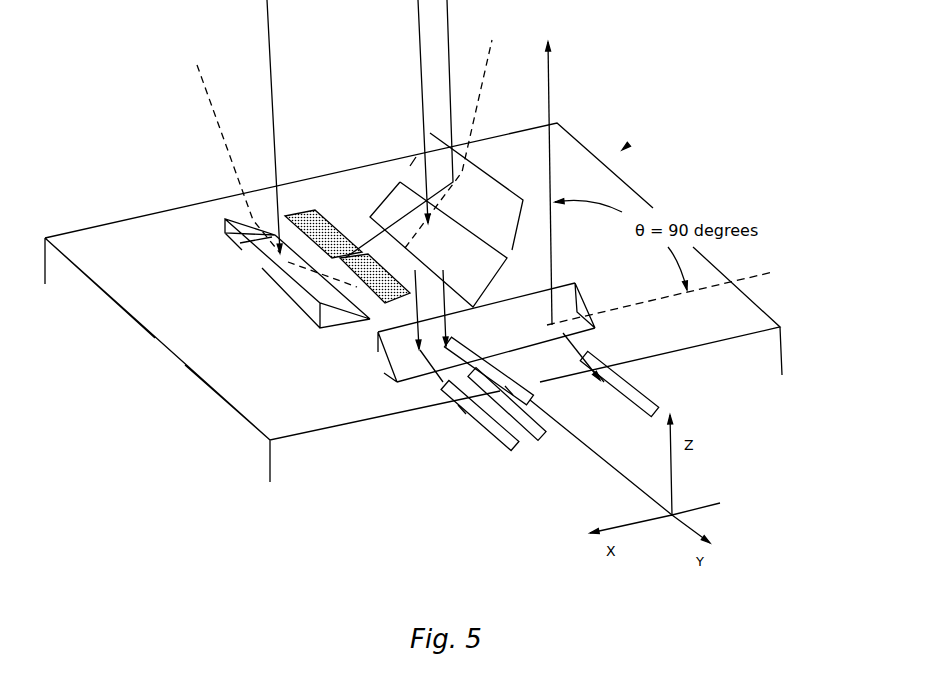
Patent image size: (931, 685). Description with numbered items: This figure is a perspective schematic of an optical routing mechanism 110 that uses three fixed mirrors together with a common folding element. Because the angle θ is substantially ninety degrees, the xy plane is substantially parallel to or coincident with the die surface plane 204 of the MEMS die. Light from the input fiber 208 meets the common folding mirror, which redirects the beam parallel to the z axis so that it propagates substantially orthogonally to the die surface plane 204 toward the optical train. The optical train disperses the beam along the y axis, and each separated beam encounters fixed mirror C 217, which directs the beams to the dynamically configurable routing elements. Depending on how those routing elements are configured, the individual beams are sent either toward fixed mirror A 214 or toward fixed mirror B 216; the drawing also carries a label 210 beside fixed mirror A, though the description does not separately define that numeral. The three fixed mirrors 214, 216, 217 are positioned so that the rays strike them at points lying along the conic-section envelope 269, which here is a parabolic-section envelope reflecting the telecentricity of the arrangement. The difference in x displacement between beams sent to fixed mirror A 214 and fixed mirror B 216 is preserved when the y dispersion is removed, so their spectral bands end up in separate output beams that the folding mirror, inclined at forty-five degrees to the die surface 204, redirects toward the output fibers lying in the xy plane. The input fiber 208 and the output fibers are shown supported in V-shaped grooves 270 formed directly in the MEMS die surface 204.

The die surface plane 204 is at (760, 318).
The input fiber 208 is at (657, 402).
The fixed mirror A 210 is at (372, 228).
The fixed mirror A 214 is at (507, 262).
The fixed mirror B 216 is at (503, 183).
The fixed mirror C 217 is at (320, 330).
The conic-section envelope 269 is at (198, 84).
The V-shaped grooves 270 is at (463, 407).
The optical routing mechanism 110 is at (622, 150).